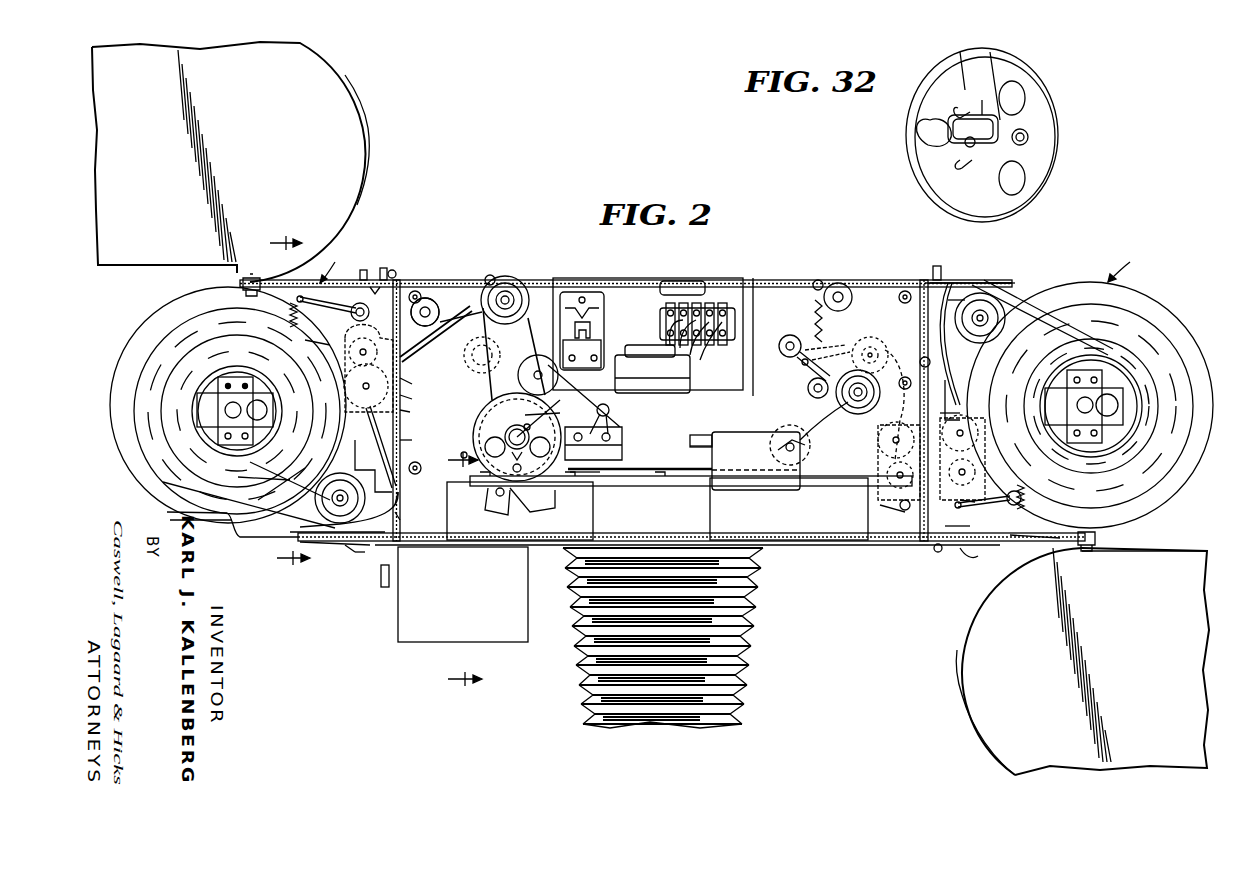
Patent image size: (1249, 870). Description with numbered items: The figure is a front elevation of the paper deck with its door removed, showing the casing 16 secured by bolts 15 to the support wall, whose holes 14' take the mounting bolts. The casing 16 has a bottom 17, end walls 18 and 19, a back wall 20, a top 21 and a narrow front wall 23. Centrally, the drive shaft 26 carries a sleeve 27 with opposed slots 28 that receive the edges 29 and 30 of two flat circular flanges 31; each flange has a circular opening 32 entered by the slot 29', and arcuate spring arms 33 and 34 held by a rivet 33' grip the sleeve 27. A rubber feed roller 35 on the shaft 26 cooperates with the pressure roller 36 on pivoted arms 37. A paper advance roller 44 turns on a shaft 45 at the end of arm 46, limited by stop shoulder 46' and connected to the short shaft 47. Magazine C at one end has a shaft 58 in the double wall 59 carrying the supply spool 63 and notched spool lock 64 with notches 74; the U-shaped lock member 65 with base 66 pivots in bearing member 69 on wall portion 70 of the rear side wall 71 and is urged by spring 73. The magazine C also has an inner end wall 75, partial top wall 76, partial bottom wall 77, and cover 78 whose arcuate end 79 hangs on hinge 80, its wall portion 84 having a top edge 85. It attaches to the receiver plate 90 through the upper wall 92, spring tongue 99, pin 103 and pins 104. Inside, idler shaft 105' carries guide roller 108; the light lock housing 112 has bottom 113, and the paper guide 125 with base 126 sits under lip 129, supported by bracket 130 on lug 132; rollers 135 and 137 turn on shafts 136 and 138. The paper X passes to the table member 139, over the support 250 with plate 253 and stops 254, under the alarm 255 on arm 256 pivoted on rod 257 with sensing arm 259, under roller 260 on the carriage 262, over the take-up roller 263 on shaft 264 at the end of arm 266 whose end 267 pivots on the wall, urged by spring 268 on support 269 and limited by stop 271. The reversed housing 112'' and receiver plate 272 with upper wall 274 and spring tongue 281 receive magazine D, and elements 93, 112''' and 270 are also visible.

In FIG. 2, the spaced holes 14' is at (676, 638).
In FIG. 2, the bolts 15 is at (416, 290).
In FIG. 2, the casing 16 is at (770, 279).
In FIG. 2, the bottom 17 is at (732, 540).
In FIG. 2, the end wall 18 is at (401, 433).
In FIG. 2, the end wall 19 is at (920, 514).
In FIG. 2, the back wall 20 is at (672, 438).
In FIG. 2, the top 21 is at (612, 280).
In FIG. 2, the narrow front wall 23 is at (690, 540).
In FIG. 2, the drive shaft 26 is at (533, 441).
In FIG. 2, the sleeve or flange support 27 is at (505, 440).
In FIG. 2, the opposed slots 28 is at (463, 571).
In FIG. 32, the edge 29 is at (970, 130).
In FIG. 2, the slot 29' is at (544, 415).
In FIG. 32, the slot 29' is at (982, 104).
In FIG. 32, the edge 30 is at (968, 146).
In FIG. 2, the flat circular flange 31 is at (551, 415).
In FIG. 32, the flat circular flange 31 is at (938, 192).
In FIG. 2, the circular opening 32 is at (514, 410).
In FIG. 32, the circular opening 32 is at (926, 140).
In FIG. 2, the arcuate spring arm 33 is at (554, 428).
In FIG. 32, the arcuate spring arm 33 is at (967, 141).
In FIG. 32, the rivet 33' is at (1023, 138).
In FIG. 2, the arcuate spring arm 34 is at (495, 438).
In FIG. 2, the rubber paper feed roller 35 is at (488, 478).
In FIG. 2, the rubber pressure guide roller 36 is at (525, 498).
In FIG. 2, the arms 37 is at (500, 505).
In FIG. 2, the paper advance roller 44 is at (512, 292).
In FIG. 2, the shaft 45 is at (508, 280).
In FIG. 2, the arm 46 is at (461, 306).
In FIG. 2, the stop shoulder 46' is at (494, 265).
In FIG. 2, the short shaft 47 is at (432, 300).
In FIG. 2, the shaft 58 is at (226, 406).
In FIG. 2, the double wall 59 is at (262, 538).
In FIG. 2, the print paper supply spool 63 is at (224, 378).
In FIG. 2, the circular spool lock 64 is at (298, 360).
In FIG. 2, the U-shaped lock member 65 is at (330, 300).
In FIG. 2, the base portion 66 is at (358, 314).
In FIG. 2, the bearing member 69 is at (376, 286).
In FIG. 2, the wall portion 70 is at (637, 428).
In FIG. 2, the rear stationary side wall 71 is at (185, 302).
In FIG. 2, the coil spring 73 is at (290, 304).
In FIG. 2, the notches 74 is at (160, 338).
In FIG. 2, the inner end wall 75 is at (373, 466).
In FIG. 2, the partial top wall 76 is at (363, 270).
In FIG. 2, the partial bottom wall 77 is at (332, 546).
In FIG. 2, the movable cover member 78 is at (352, 92).
In FIG. 2, the arcuate end portion 79 is at (369, 146).
In FIG. 2, the hinge 80 is at (242, 283).
In FIG. 2, the wall portion 84 is at (259, 131).
In FIG. 2, the top edge 85 is at (119, 266).
In FIG. 2, the magazine receiver plate 90 is at (414, 444).
In FIG. 2, the upper wall 92 is at (384, 268).
In FIG. 2, the plate 93 is at (352, 552).
In FIG. 2, the spring tongue 99 is at (362, 554).
In FIG. 2, the pin 103 is at (383, 580).
In FIG. 2, the spaced pins 104 is at (393, 270).
In FIG. 2, the idler shaft 105' is at (643, 384).
In FIG. 2, the paper guide roller 108 is at (340, 480).
In FIG. 2, the light lock housing 112 is at (361, 369).
In FIG. 2, the light lock housing 112'' is at (874, 461).
In FIG. 2, the gear train 112''' is at (989, 457).
In FIG. 2, the bottom portion 113 is at (364, 410).
In FIG. 2, the paper guide 125 is at (402, 508).
In FIG. 2, the arcuate base portion 126 is at (402, 522).
In FIG. 2, the lip 129 is at (300, 540).
In FIG. 2, the bracket 130 is at (462, 452).
In FIG. 2, the lug 132 is at (418, 409).
In FIG. 2, the upper roller 135 is at (418, 318).
In FIG. 2, the shaft 136 is at (404, 365).
In FIG. 2, the lower roller 137 is at (984, 432).
In FIG. 2, the shaft 138 is at (421, 384).
In FIG. 2, the table member 139 is at (668, 511).
In FIG. 2, the secondary table or paper mask and support 250 is at (694, 486).
In FIG. 2, the plate 253 is at (620, 472).
In FIG. 2, the stops 254 is at (697, 324).
In FIG. 2, the alarm device 255 is at (628, 432).
In FIG. 2, the arm 256 is at (608, 408).
In FIG. 2, the rod member 257 is at (575, 378).
In FIG. 2, the arm 259 is at (597, 473).
In FIG. 2, the roller 260 is at (790, 436).
In FIG. 2, the carriage 262 is at (782, 490).
In FIG. 2, the cushion or take-up roller 263 is at (870, 338).
In FIG. 2, the shaft 264 is at (854, 402).
In FIG. 2, the arm 266 is at (832, 346).
In FIG. 2, the end 267 is at (786, 336).
In FIG. 2, the coil spring 268 is at (815, 300).
In FIG. 2, the support 269 is at (828, 265).
In FIG. 2, the pulley 270 is at (840, 290).
In FIG. 2, the stop 271 is at (808, 388).
In FIG. 2, the magazine receiver plate 272 is at (918, 330).
In FIG. 2, the upper wall 274 is at (950, 280).
In FIG. 2, the spring tongue 281 is at (977, 557).
In FIG. 2, the magazine C is at (333, 266).
In FIG. 2, the magazine D is at (1125, 266).
In FIG. 2, the strip print paper X is at (694, 419).